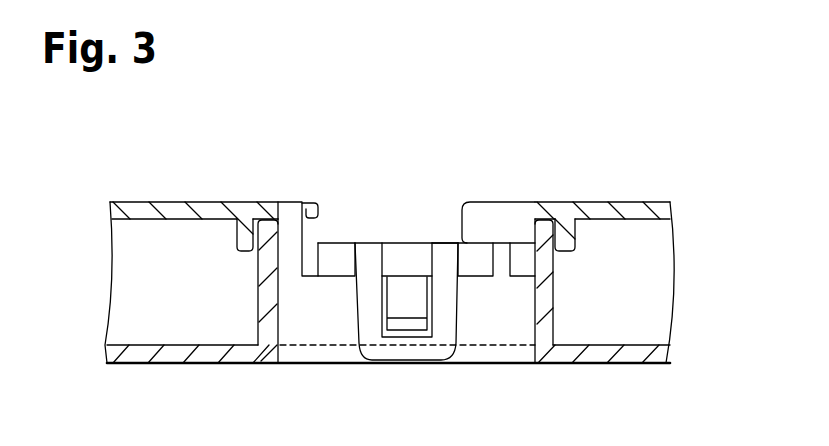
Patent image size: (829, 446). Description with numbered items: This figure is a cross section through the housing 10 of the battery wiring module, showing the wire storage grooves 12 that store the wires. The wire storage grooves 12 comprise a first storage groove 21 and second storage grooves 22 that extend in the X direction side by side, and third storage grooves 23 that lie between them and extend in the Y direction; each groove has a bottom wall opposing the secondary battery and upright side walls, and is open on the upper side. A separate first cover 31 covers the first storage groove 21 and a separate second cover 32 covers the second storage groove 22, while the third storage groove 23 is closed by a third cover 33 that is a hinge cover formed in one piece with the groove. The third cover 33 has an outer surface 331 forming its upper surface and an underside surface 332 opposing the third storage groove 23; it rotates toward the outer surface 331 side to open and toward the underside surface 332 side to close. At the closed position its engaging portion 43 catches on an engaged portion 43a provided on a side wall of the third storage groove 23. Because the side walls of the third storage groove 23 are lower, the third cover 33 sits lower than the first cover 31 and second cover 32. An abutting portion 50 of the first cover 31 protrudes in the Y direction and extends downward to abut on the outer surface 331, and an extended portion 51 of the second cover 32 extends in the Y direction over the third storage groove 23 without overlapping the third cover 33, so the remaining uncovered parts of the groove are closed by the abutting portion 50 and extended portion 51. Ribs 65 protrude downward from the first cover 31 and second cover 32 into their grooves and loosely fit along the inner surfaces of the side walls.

The housing 10 is at (99, 187).
The wire storage grooves 12 is at (125, 364).
The first storage groove 21 is at (622, 347).
The second storage grooves 22 is at (186, 347).
The third storage grooves 23 is at (469, 349).
The first cover 31 is at (617, 201).
The second covers 32 is at (172, 200).
The third cover 33 is at (402, 242).
The outer surface 331 is at (445, 242).
The underside surface 332 is at (334, 283).
The engaging portion 43 is at (405, 351).
The engaged portion 43a is at (412, 302).
The abutting portion 50 is at (481, 202).
The extended portions 51 is at (306, 201).
The ribs 65 is at (242, 240).